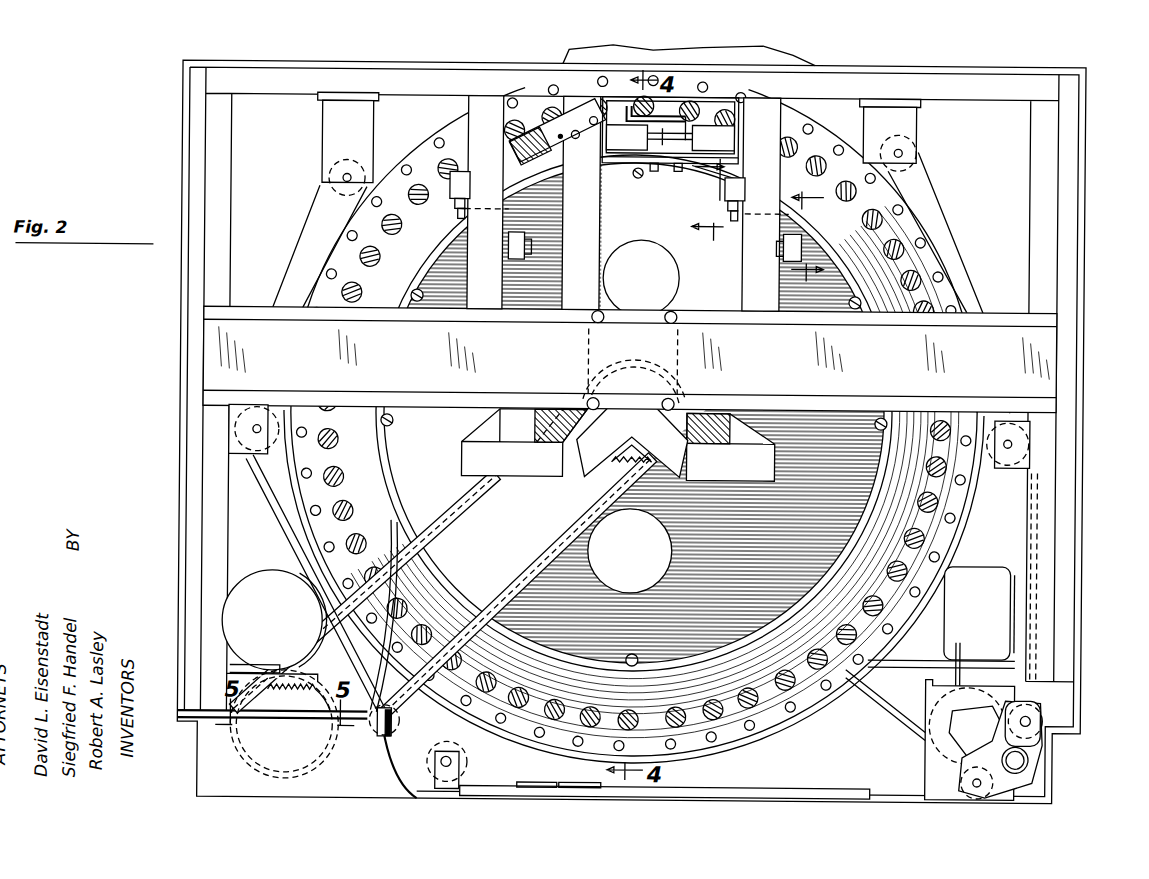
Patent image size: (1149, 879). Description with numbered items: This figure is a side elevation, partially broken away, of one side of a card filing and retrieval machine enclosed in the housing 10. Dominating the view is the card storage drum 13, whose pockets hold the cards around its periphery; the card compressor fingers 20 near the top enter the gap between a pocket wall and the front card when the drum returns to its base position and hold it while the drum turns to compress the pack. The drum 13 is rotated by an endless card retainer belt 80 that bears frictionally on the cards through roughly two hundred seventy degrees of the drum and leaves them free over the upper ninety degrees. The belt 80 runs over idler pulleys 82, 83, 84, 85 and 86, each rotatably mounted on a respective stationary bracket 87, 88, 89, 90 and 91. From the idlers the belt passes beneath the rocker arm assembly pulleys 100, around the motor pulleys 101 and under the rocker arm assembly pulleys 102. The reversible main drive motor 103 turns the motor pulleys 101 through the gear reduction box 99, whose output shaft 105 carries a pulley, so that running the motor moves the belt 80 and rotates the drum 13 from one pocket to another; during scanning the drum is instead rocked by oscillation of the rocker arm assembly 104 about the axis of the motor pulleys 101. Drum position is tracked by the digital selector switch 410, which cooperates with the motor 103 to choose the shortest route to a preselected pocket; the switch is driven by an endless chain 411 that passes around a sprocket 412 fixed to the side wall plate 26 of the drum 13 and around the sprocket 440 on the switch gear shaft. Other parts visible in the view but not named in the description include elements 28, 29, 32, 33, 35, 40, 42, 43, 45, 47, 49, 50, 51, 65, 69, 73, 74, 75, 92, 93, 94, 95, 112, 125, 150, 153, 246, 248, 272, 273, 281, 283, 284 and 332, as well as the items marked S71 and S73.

The housing 10 is at (1096, 104).
The card storage drum 13 is at (644, 235).
The card compressor fingers 20 is at (628, 104).
The side wall plate 26 is at (655, 447).
The outer ring 28 is at (462, 132).
The screws 29 is at (416, 304).
The section line 32 is at (817, 242).
The section line 33 is at (700, 204).
The perforations 35 is at (400, 228).
The hole 40 is at (393, 199).
The side frame members 42 is at (200, 303).
The left frame post 43 is at (268, 97).
The cross bar 45 is at (630, 359).
The bearing 47 is at (682, 340).
The mounting holes 49 is at (666, 323).
The hole 50 is at (393, 227).
The bar end 51 is at (203, 352).
The roller 65 is at (512, 152).
The arm 69 is at (560, 162).
The posts 73 is at (624, 204).
The pin 74 is at (591, 158).
The plate 75 is at (563, 134).
The endless card retainer belt 80 is at (337, 222).
The idler pulley 82 is at (395, 720).
The idler pulley 83 is at (270, 452).
The idler pulley 84 is at (325, 211).
The idler pulley 85 is at (922, 170).
The idler pulley 86 is at (1000, 466).
The stationary bracket 87 is at (383, 735).
The stationary bracket 88 is at (246, 460).
The stationary bracket 89 is at (348, 144).
The stationary bracket 90 is at (916, 130).
The stationary bracket 91 is at (1016, 495).
The pivot roller 92 is at (462, 752).
The bracket 93 is at (468, 768).
The plate 94 is at (598, 788).
The plate 95 is at (545, 789).
The gear reduction box 99 is at (958, 676).
The rocker arm assembly pulleys 100 is at (1050, 732).
The motor pulleys 101 is at (931, 740).
The rocker arm assembly pulleys 102 is at (964, 778).
The reversible electric motor 103 is at (995, 580).
The rocker arm assembly 104 is at (1048, 766).
The output shaft 105 is at (975, 716).
The pin 112 is at (1032, 756).
The cam 125 is at (960, 740).
The drum 150 is at (274, 621).
The rail 153 is at (345, 670).
The block 246 is at (723, 138).
The block 248 is at (672, 139).
The block 272 is at (548, 58).
The block 273 is at (647, 62).
The link 281 is at (634, 220).
The block 283 is at (515, 260).
The block 284 is at (480, 180).
The strut 332 is at (880, 705).
The digital selector switch 410 is at (320, 680).
The endless chain 411 is at (533, 576).
The sprocket 412 is at (632, 430).
The sprocket 440 is at (284, 723).
The switch S71 is at (640, 182).
The switch S73 is at (675, 181).